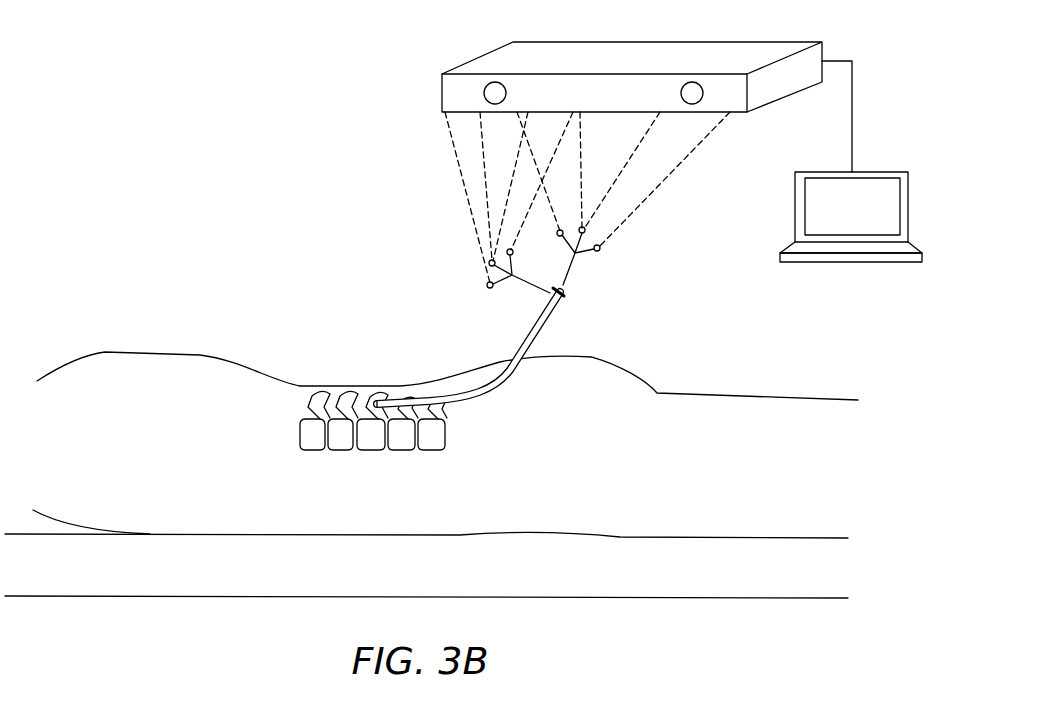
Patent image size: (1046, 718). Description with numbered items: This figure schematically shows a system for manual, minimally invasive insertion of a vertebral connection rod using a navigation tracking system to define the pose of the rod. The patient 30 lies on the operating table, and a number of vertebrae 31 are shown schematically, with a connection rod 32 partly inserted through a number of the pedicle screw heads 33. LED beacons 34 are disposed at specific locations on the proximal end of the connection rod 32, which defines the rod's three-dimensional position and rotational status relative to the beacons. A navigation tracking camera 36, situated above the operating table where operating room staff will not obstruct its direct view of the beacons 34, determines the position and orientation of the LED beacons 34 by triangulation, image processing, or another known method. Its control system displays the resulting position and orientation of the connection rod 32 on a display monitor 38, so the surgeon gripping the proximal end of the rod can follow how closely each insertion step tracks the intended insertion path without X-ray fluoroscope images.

The patient 30 is at (117, 350).
The vertebrae 31 is at (310, 424).
The connection rod 32 is at (497, 384).
The pedicle screw heads 33 is at (418, 390).
The LED beacons 34 is at (497, 289).
The navigation tracking camera 36 is at (480, 57).
The display monitor 38 is at (820, 207).